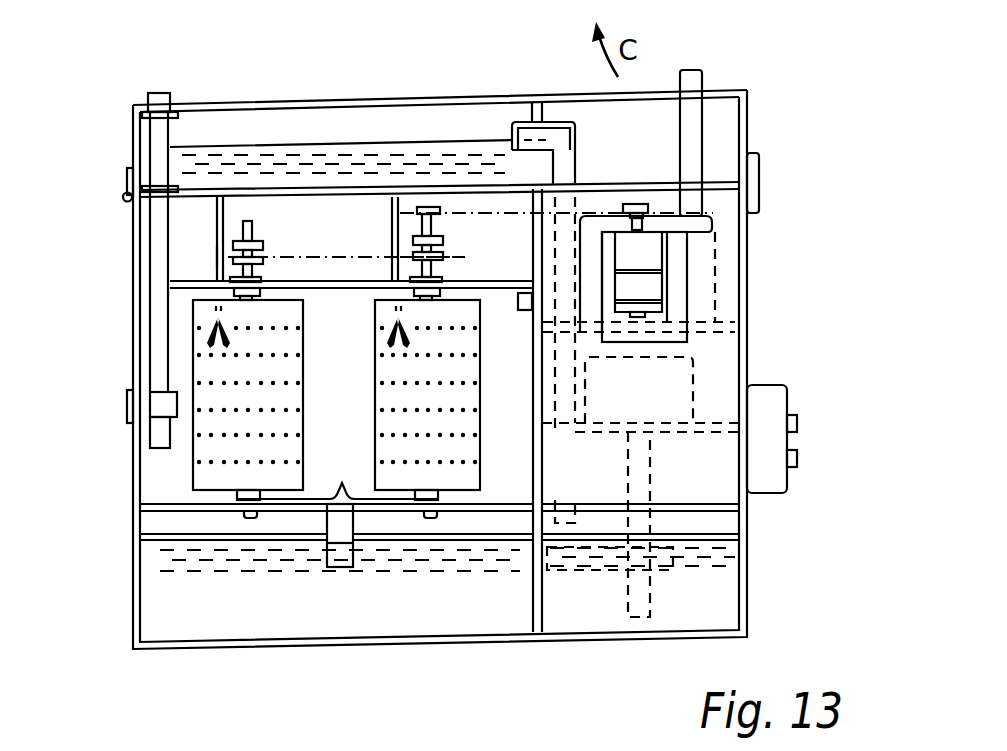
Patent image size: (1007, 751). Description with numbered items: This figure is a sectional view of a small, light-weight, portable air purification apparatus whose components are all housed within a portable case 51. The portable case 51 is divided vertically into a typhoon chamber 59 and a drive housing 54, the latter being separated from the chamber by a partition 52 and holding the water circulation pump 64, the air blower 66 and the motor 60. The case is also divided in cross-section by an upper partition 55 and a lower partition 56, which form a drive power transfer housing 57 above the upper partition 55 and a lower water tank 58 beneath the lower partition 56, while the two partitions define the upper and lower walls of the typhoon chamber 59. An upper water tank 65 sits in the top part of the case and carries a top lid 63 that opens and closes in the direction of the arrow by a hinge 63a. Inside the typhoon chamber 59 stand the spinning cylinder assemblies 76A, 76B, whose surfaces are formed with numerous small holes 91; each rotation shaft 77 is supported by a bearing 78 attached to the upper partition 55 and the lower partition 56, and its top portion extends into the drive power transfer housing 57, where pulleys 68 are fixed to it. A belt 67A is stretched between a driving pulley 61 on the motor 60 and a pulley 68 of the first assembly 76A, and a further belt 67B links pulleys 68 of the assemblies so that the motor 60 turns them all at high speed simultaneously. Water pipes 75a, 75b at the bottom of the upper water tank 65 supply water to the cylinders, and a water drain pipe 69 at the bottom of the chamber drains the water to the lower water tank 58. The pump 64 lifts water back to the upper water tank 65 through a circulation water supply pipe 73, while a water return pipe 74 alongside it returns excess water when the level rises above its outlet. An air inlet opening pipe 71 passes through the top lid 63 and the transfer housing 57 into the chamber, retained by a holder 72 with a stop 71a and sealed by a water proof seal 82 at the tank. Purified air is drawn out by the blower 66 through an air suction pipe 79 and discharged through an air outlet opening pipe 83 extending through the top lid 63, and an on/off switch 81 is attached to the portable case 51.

The portable case 51 is at (135, 338).
The partition wall 52 is at (532, 382).
The drive housing 54 is at (633, 204).
The upper partition 55 is at (342, 289).
The lower partition 56 is at (482, 505).
The drive power transfer housing 57 is at (315, 213).
The lower water tank 58 is at (393, 590).
The typhoon chamber 59 is at (320, 406).
The motor 60 is at (653, 257).
The driving pulley 61 is at (638, 204).
The top lid 63 is at (478, 100).
The hinge 63a is at (123, 196).
The water circulation pump 64 is at (677, 387).
The upper water tank 65 is at (372, 132).
The air blower 66 is at (707, 223).
The belt 67A is at (492, 213).
The belt 67B is at (317, 257).
The pulley 68 is at (445, 258).
The water drain pipe 69 is at (338, 567).
The air inlet opening pipe 71 is at (157, 262).
The stopper 71a is at (157, 428).
The holder 72 is at (153, 408).
The circulation water supply pipe 73 is at (563, 153).
The water return pipe 74 is at (545, 126).
The water pipe 75a is at (405, 257).
The water pipe 75b is at (217, 257).
The spinning cylinder assembly 76A is at (480, 410).
The spinning cylinder assembly 76B is at (194, 374).
The rotation shaft 77 is at (243, 229).
The bearing 78 is at (234, 290).
The air suction pipe 79 is at (523, 311).
The on/off switch 81 is at (795, 444).
The water proof seal 82 is at (173, 187).
The air outlet opening pipe 83 is at (693, 148).
The small holes 91 is at (413, 405).